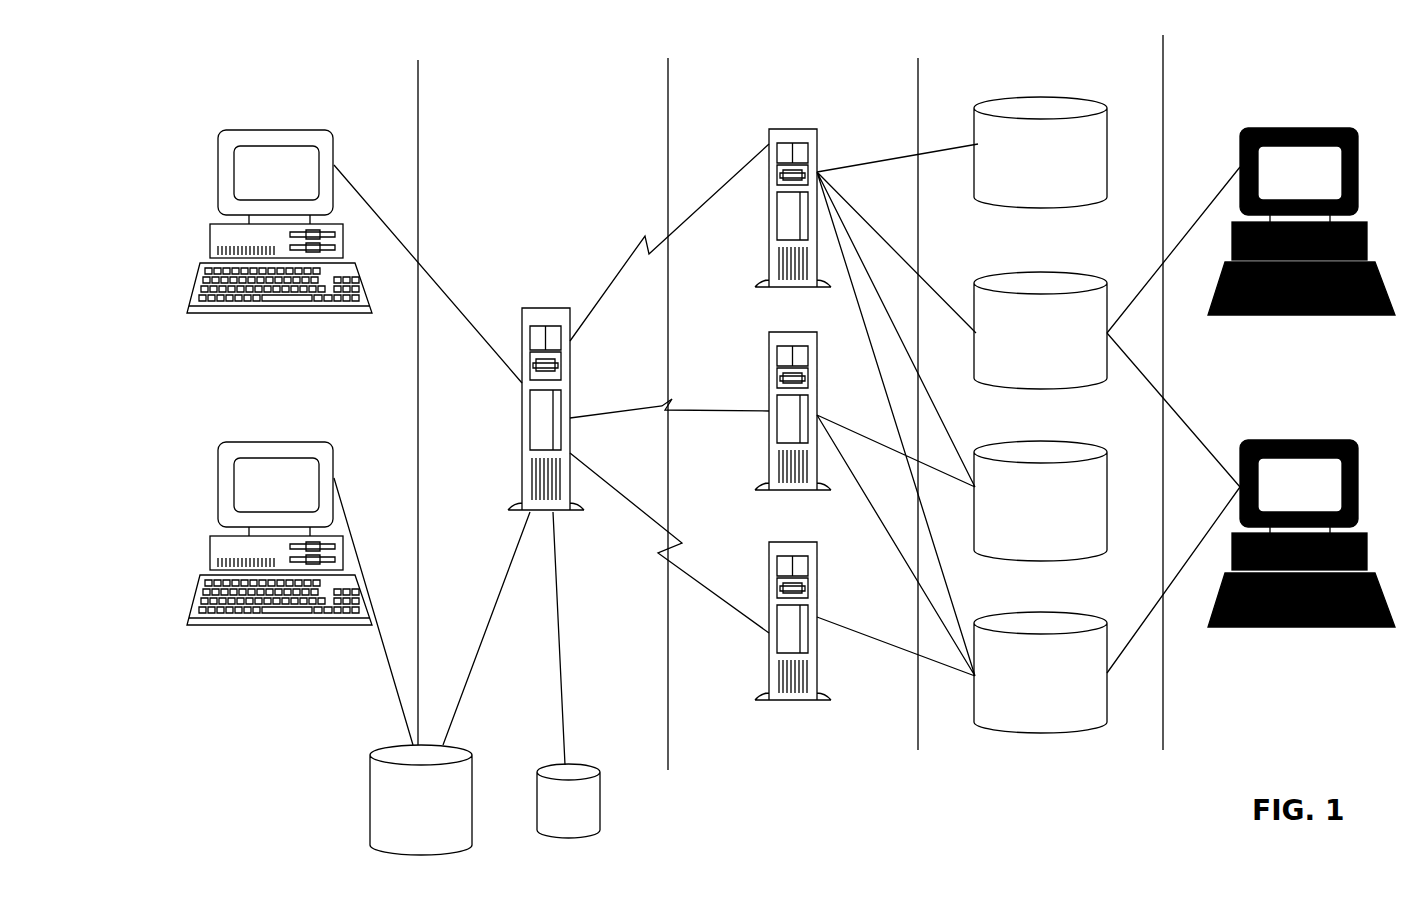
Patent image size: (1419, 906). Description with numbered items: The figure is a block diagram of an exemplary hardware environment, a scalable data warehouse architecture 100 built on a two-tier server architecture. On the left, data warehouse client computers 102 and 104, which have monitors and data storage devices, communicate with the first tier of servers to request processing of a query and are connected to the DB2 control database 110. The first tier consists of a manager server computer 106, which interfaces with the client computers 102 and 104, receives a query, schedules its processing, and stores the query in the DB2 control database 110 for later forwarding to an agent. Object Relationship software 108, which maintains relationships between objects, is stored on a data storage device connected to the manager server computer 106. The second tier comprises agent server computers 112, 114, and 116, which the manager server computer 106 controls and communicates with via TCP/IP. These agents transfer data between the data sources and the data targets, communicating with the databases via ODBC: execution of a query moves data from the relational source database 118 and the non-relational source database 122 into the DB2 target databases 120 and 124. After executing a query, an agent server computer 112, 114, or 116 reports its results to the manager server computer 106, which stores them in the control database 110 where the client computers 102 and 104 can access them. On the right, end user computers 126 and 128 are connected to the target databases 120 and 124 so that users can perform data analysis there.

The scalable data warehouse architecture 100 is at (475, 44).
The data warehouse client computer 102 is at (322, 129).
The data warehouse client computer 104 is at (312, 442).
The manager server computer 106 is at (532, 307).
The Object Relationship (OR) software 108 is at (598, 807).
The DB2 control database 110 is at (372, 792).
The agent server computer 112 is at (787, 128).
The agent server computer 114 is at (783, 332).
The agent server computer 116 is at (785, 542).
The relational source database 118 is at (1070, 97).
The DB2 target database 120 is at (1070, 270).
The non-relational source database 122 is at (1068, 440).
The DB2 target database 124 is at (1068, 612).
The end user computer 126 is at (1287, 128).
The end user computer 128 is at (1297, 442).